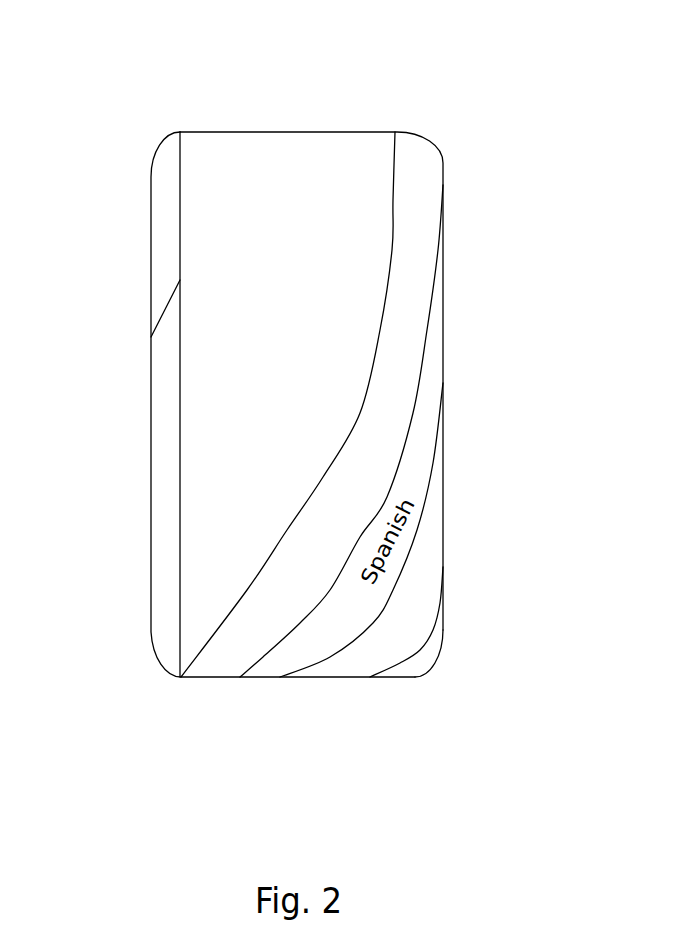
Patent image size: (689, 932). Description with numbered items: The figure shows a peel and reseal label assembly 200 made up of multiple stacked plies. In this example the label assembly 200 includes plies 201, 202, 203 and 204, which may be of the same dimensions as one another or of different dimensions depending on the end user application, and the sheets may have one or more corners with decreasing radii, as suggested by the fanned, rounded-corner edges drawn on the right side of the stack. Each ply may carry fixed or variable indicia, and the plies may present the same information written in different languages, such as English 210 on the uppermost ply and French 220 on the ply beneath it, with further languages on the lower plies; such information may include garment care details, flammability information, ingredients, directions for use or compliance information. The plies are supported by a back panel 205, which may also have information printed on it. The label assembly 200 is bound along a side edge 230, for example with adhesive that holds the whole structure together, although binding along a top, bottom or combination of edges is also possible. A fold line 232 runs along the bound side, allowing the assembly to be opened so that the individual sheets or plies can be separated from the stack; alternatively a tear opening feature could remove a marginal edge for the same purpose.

The peel and reseal label assembly 200 is at (208, 115).
The ply 201 is at (289, 396).
The ply 202 is at (345, 568).
The ply 203 is at (292, 653).
The ply 204 is at (365, 650).
The back panel 205 is at (423, 657).
The English 210 is at (272, 185).
The French 220 is at (418, 192).
The side edge 230 is at (151, 247).
The fold line 232 is at (179, 517).